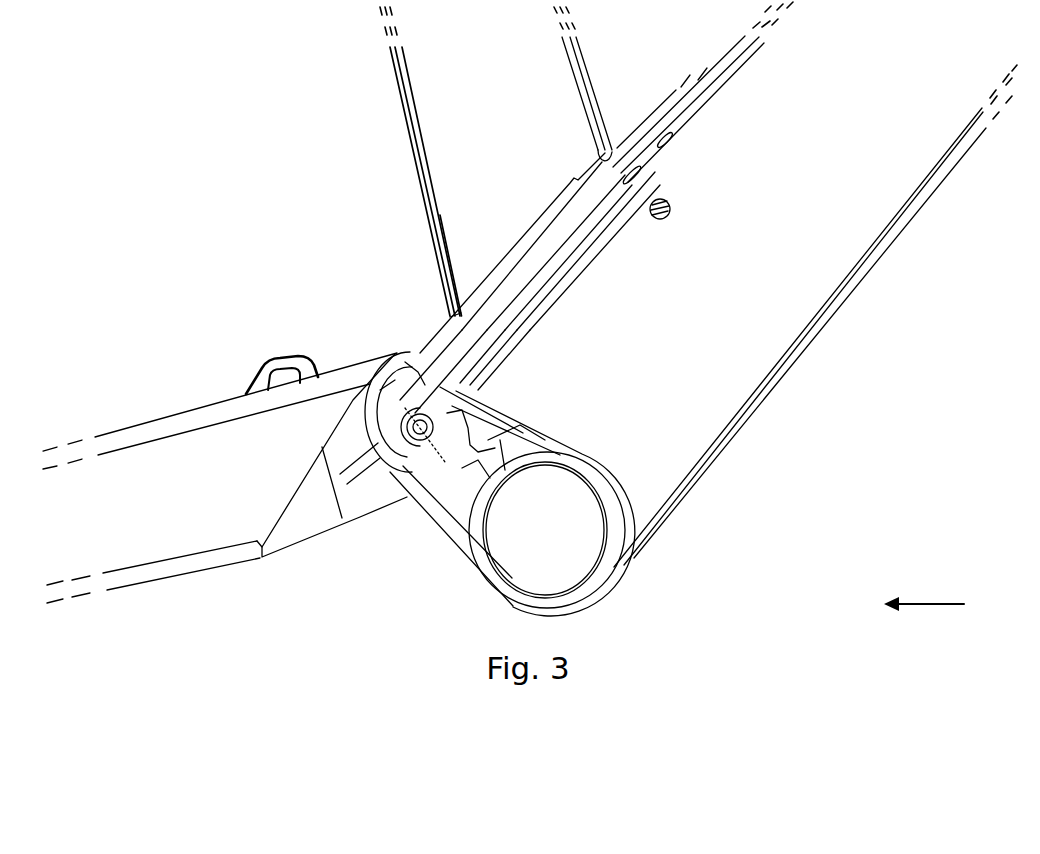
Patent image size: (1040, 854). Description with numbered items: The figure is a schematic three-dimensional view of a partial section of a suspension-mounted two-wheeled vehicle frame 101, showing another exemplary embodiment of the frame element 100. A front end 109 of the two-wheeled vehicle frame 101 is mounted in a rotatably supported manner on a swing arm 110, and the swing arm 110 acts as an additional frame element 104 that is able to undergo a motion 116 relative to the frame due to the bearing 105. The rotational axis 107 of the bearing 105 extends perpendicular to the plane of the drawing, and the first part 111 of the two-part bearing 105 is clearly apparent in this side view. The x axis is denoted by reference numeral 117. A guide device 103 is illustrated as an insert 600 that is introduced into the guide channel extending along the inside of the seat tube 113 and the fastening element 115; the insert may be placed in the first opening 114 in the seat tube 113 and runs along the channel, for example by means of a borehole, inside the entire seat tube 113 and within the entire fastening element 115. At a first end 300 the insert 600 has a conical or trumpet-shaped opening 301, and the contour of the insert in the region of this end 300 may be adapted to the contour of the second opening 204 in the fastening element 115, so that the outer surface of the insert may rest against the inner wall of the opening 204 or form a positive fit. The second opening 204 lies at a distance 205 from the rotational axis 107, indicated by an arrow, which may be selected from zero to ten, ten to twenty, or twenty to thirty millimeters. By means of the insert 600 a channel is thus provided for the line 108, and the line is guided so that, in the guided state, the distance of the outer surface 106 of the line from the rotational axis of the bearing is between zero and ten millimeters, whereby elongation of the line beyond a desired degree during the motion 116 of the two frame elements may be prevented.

The frame element 100 is at (604, 60).
The suspension-mounted two-wheeled vehicle frame 101 is at (245, 128).
The guide device 103 is at (536, 296).
The additional frame element 104 is at (160, 570).
The bearing 105 is at (382, 393).
The outer surface of the line 106 is at (640, 117).
The rotational axis 107 is at (407, 362).
The line 108 is at (683, 82).
The front end 109 is at (864, 276).
The swing arm 110 is at (130, 424).
The first part of the two-part bearing 111 is at (420, 505).
The seat tube 113 is at (398, 90).
The first opening 114 is at (610, 152).
The fastening element 115 is at (427, 527).
The motion 116 is at (174, 411).
The x axis 117 is at (905, 602).
The second opening 204 is at (394, 455).
The distance 205 is at (470, 442).
The first end 300 is at (368, 440).
The conical or trumpet-shaped opening 301 is at (378, 378).
The insert 600 is at (612, 212).